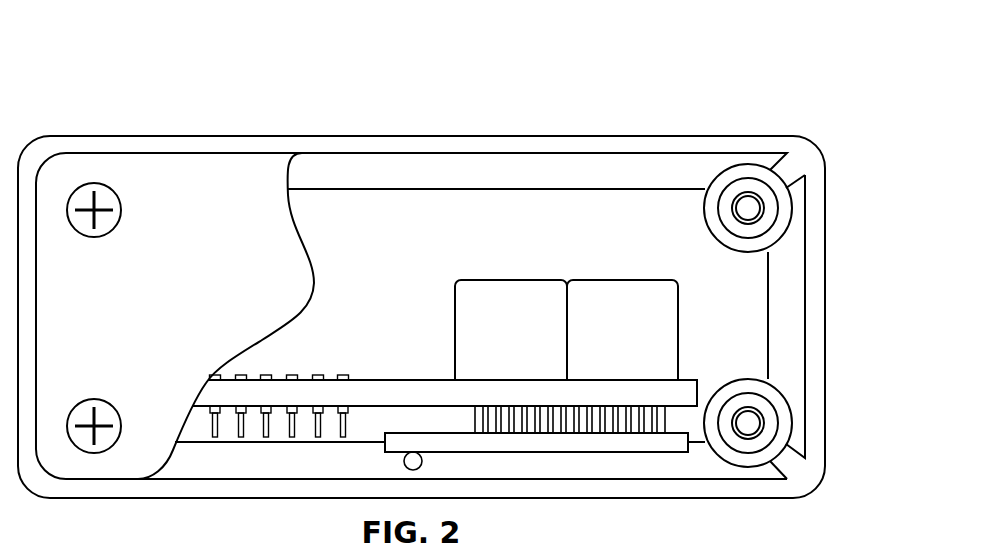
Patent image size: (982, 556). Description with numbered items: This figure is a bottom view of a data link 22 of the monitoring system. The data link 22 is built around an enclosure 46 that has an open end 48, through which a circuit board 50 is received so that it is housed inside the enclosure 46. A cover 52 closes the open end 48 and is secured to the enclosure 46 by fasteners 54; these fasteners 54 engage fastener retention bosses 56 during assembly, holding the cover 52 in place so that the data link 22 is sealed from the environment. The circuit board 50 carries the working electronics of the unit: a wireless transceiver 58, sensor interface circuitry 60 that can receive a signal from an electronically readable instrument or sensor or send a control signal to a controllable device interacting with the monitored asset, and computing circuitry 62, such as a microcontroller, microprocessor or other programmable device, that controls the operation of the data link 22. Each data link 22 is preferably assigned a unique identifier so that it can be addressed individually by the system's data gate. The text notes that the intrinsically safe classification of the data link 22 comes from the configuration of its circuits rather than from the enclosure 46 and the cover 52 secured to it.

The data link 22 is at (121, 56).
The enclosure 46 is at (457, 135).
The open end 48 is at (718, 312).
The circuit board 50 is at (375, 408).
The cover 52 is at (163, 192).
The fasteners 54 is at (100, 235).
The fastener retention bosses 56 is at (767, 208).
The wireless transceiver 58 is at (567, 272).
The sensor interface circuitry 60 is at (424, 376).
The computing circuitry 62 is at (320, 368).